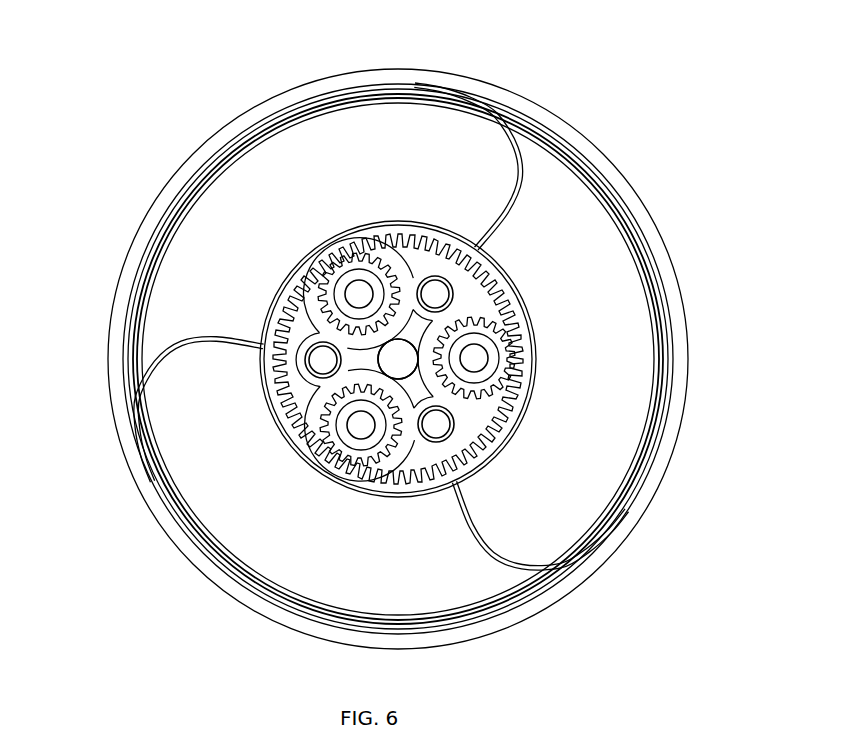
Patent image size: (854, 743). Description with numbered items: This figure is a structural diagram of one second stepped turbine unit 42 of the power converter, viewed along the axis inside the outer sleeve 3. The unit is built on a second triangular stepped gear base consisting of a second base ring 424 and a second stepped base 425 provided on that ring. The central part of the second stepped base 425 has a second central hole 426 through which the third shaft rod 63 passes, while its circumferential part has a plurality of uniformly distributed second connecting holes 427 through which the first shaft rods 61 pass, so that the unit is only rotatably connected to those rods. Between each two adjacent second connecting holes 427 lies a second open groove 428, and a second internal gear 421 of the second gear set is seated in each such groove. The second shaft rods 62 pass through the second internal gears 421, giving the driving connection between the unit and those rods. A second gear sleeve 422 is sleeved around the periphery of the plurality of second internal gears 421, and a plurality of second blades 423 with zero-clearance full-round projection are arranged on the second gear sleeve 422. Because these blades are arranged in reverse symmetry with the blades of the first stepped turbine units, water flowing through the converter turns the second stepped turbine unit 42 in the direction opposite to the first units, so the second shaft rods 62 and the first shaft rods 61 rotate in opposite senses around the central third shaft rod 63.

The outer sleeve 3 is at (467, 84).
The second stepped turbine unit 42 is at (150, 185).
The second internal gear 421 is at (335, 265).
The second gear sleeve 422 is at (388, 237).
The second blade 423 is at (420, 160).
The second base ring 424 is at (295, 350).
The second stepped base 425 is at (462, 300).
The second central hole 426 is at (378, 360).
The second connecting hole 427 is at (318, 375).
The second open groove 428 is at (402, 443).
The first shaft rod 61 is at (437, 293).
The second shaft rod 62 is at (358, 293).
The third shaft rod 63 is at (400, 360).